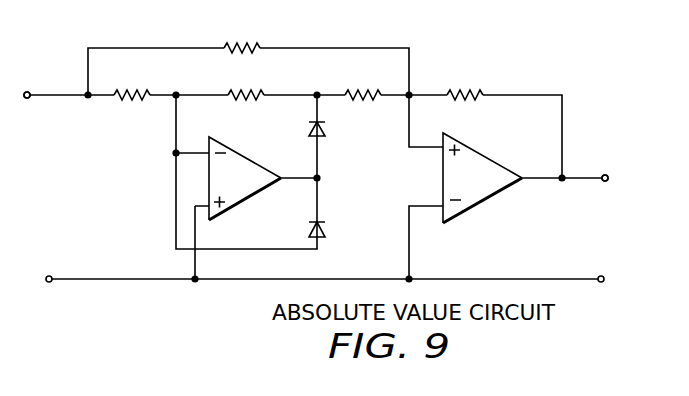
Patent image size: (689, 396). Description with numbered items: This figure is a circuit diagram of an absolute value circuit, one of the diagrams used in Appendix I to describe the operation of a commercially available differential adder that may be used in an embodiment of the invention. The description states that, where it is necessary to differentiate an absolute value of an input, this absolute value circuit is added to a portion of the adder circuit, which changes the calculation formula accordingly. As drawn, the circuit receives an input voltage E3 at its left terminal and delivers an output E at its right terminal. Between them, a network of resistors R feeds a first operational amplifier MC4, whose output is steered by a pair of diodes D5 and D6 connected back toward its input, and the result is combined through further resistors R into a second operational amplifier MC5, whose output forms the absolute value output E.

The resistor R is at (298, 58).
The operational amplifier MC4 is at (245, 178).
The operational amplifier MC5 is at (482, 178).
The diode D5 is at (341, 134).
The diode D6 is at (341, 226).
The input voltage E3 is at (31, 113).
The output voltage E is at (616, 179).